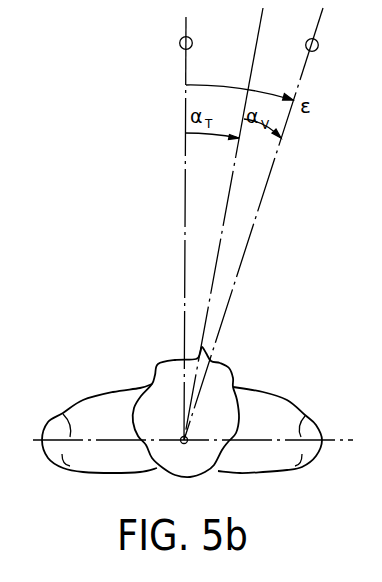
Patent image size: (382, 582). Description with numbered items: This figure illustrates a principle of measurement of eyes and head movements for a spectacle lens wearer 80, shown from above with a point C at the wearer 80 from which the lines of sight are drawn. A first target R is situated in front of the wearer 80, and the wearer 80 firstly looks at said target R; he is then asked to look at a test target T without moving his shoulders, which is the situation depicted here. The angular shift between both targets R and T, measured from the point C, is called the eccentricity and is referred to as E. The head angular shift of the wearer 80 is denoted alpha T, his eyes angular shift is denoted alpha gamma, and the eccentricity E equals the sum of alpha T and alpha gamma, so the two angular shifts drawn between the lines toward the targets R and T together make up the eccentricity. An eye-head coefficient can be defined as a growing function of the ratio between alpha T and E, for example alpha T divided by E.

The spectacle lens wearer 80 is at (283, 385).
The first target R is at (180, 42).
The test target T is at (318, 43).
The center point C is at (181, 437).